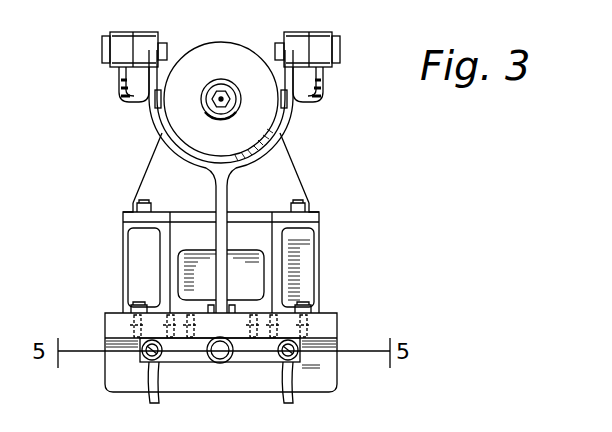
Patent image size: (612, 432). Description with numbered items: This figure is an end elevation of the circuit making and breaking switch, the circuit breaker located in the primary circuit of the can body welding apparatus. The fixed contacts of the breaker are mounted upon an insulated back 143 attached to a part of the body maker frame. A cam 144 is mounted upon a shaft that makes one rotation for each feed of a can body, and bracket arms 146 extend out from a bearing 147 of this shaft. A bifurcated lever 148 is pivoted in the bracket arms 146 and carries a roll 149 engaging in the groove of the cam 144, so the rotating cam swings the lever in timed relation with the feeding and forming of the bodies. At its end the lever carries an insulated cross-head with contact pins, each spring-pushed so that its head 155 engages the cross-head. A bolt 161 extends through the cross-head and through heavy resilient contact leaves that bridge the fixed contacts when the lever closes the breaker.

The insulated back 143 is at (327, 382).
The cam 144 is at (235, 58).
The bracket arms 146 is at (303, 83).
The bearing 147 is at (288, 192).
The bifurcated lever 148 is at (219, 198).
The roll 149 is at (282, 108).
The pin heads 155 is at (145, 362).
The bolt 161 is at (220, 363).